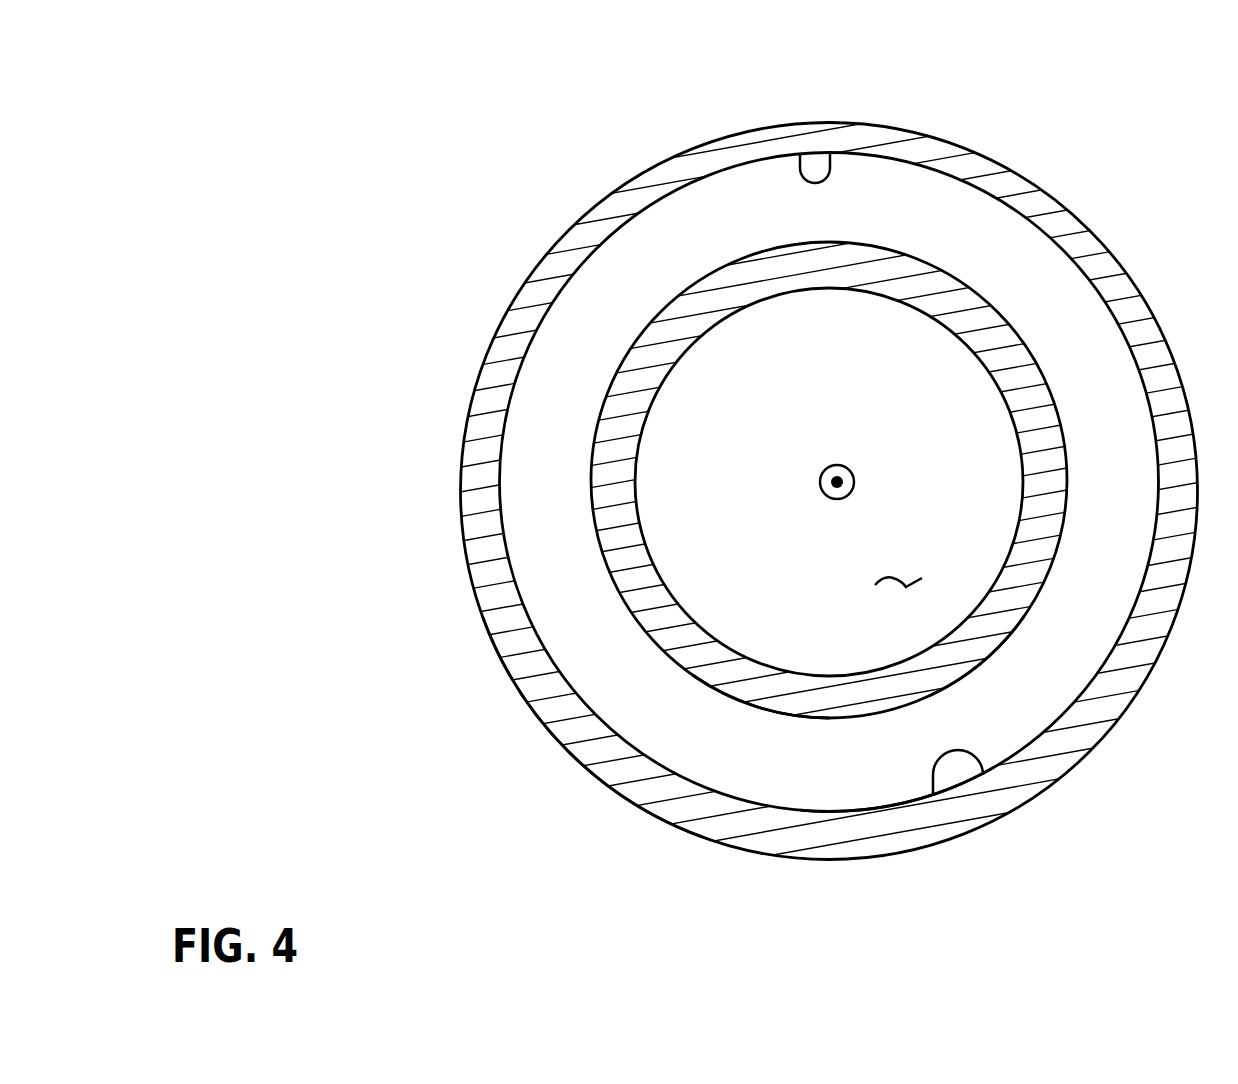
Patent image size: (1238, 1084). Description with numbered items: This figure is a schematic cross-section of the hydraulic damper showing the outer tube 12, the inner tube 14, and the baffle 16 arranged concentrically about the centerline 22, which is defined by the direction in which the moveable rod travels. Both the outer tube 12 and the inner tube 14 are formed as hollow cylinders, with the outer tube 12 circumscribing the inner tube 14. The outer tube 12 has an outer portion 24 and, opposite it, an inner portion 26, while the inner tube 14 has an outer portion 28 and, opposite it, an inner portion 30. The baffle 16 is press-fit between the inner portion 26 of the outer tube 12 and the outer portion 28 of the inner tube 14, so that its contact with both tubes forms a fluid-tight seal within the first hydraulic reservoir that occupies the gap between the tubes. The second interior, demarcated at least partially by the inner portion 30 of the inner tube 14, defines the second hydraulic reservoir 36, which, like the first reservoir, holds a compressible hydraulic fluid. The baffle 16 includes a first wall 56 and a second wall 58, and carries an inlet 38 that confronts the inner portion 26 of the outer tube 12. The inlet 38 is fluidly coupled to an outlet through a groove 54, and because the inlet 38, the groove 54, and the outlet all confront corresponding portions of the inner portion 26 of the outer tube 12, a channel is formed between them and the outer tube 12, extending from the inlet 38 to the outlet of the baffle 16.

The outer tube 12 is at (458, 455).
The inner tube 14 is at (622, 600).
The baffle 16 is at (503, 552).
The centerline 22 is at (853, 468).
The outer portion 24 is at (573, 757).
The inner portion 26 is at (900, 806).
The outer portion 28 is at (758, 717).
The inner portion 30 is at (820, 680).
The second hydraulic reservoir 36 is at (905, 588).
The inlet 38 is at (838, 155).
The groove 54 is at (658, 767).
The first wall 56 is at (983, 775).
The second wall 58 is at (985, 668).